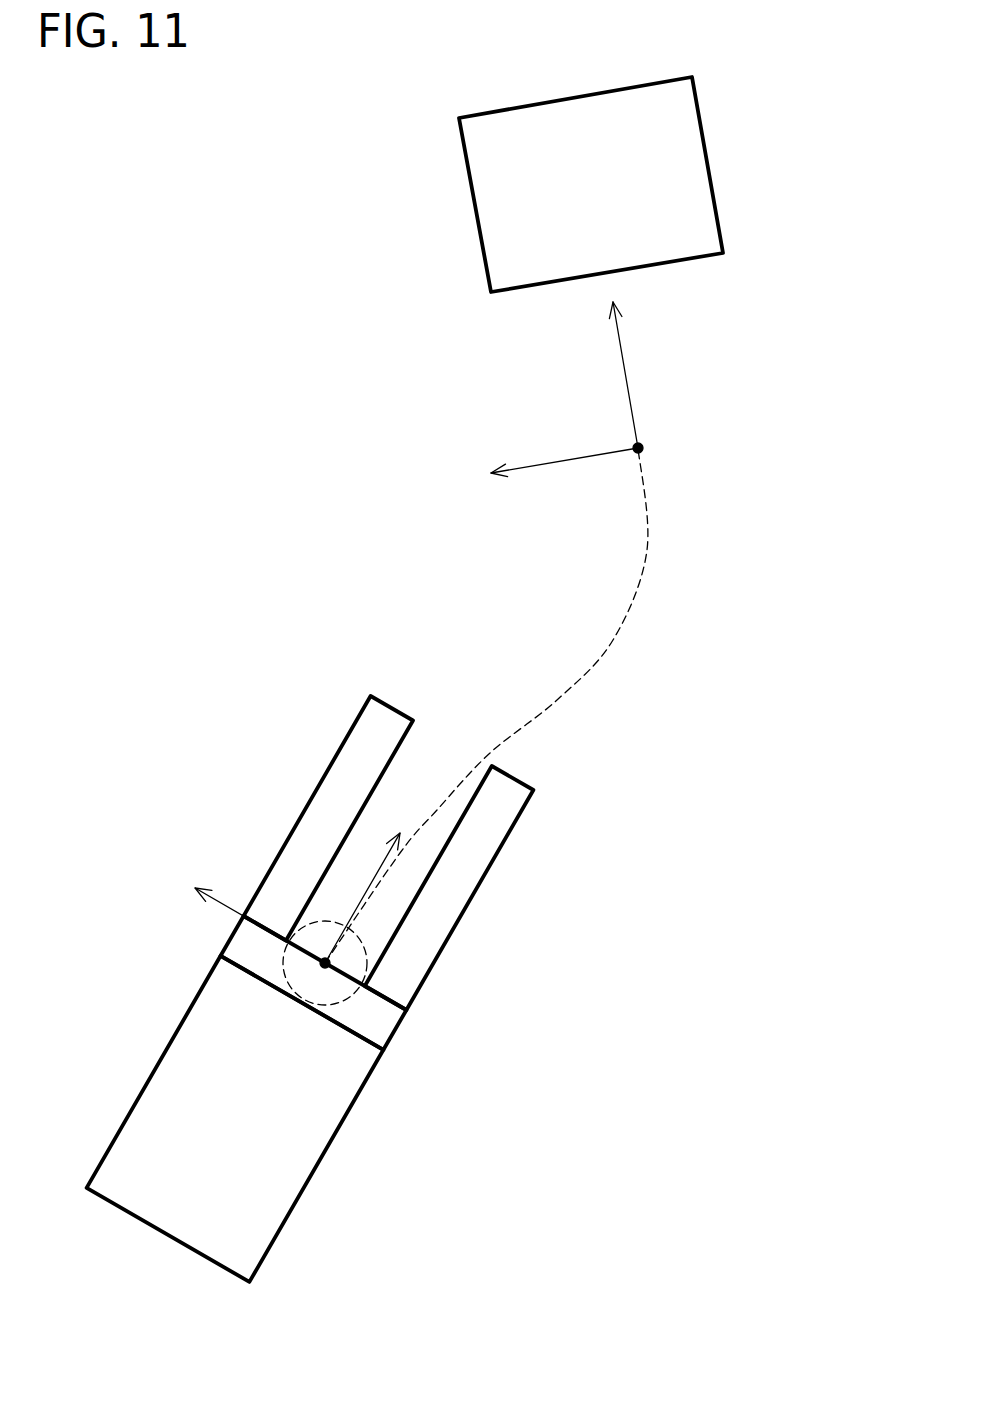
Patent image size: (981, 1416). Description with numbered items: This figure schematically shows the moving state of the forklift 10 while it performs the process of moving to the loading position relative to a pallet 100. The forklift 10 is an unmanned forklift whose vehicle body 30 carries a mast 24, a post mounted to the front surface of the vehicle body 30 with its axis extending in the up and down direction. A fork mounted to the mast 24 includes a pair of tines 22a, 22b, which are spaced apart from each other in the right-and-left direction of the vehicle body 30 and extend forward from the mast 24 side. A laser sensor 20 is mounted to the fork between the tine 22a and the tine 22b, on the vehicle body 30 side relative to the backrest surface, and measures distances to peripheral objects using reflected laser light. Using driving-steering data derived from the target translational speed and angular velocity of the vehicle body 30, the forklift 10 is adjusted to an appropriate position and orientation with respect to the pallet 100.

The forklift 10 is at (175, 208).
The laser sensor 20 is at (396, 907).
The tine 22a is at (483, 843).
The tine 22b is at (325, 807).
The mast 24 is at (377, 1025).
The vehicle body 30 is at (298, 1161).
The pallet 100 is at (710, 165).